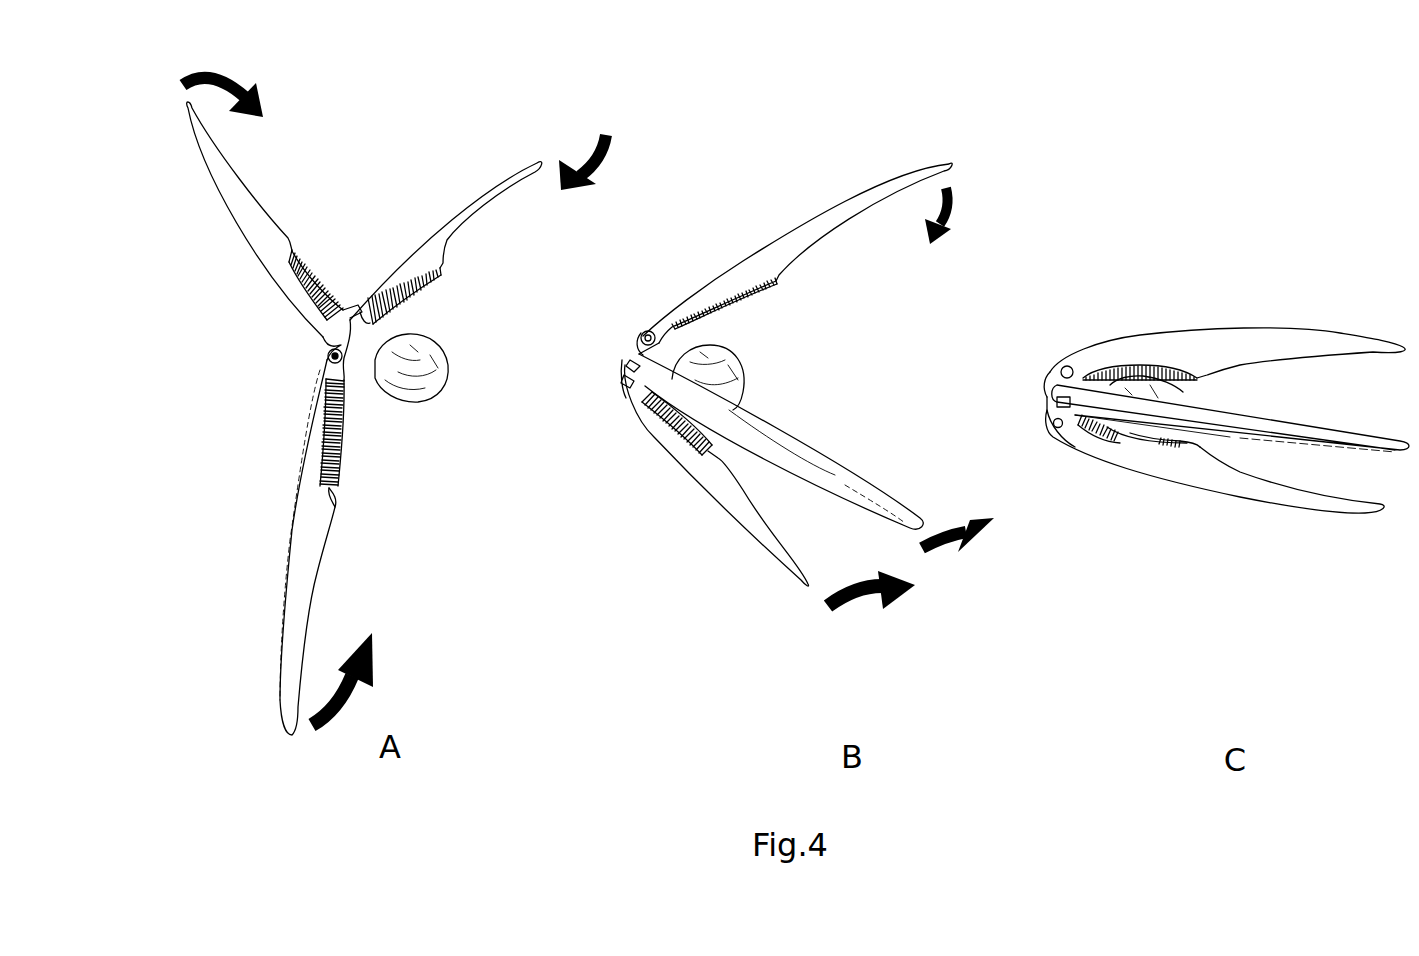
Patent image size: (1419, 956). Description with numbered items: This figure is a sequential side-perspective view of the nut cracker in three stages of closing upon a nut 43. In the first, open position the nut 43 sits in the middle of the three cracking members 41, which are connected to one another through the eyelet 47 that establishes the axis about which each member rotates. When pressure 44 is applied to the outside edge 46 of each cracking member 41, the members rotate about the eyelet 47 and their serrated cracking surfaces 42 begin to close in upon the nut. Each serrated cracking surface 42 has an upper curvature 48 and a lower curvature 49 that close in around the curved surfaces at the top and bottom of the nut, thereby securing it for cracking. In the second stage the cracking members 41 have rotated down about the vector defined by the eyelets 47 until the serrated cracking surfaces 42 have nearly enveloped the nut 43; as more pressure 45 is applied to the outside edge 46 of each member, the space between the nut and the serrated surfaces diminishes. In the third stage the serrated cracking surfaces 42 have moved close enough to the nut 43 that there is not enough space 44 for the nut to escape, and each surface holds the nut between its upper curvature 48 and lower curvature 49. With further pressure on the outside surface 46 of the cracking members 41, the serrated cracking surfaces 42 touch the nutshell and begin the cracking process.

In FIG. 4A, the cracking member 41 is at (466, 200).
In FIG. 4B, the cracking member 41 is at (808, 241).
In FIG. 4C, the cracking member 41 is at (1220, 343).
In FIG. 4A, the serrated cracking surface 42 is at (405, 295).
In FIG. 4B, the serrated cracking surface 42 is at (740, 293).
In FIG. 4C, the serrated cracking surface 42 is at (1128, 365).
In FIG. 4A, the nut 43 is at (440, 390).
In FIG. 4B, the nut 43 is at (733, 383).
In FIG. 4C, the nut 43 is at (1155, 383).
In FIG. 4A, the pressure 44 is at (372, 677).
In FIG. 4B, the pressure 44 is at (600, 135).
In FIG. 4C, the pressure 44 is at (1195, 393).
In FIG. 4B, the pressure 45 is at (850, 612).
In FIG. 4A, the outside edge 46 is at (283, 613).
In FIG. 4B, the outside edge 46 is at (890, 175).
In FIG. 4C, the outside edge 46 is at (1325, 328).
In FIG. 4A, the eyelet 47 is at (326, 360).
In FIG. 4B, the eyelet 47 is at (645, 332).
In FIG. 4C, the eyelet 47 is at (1061, 406).
In FIG. 4A, the upper curvature 48 is at (340, 393).
In FIG. 4B, the upper curvature 48 is at (717, 475).
In FIG. 4C, the upper curvature 48 is at (1093, 437).
In FIG. 4A, the lower curvature 49 is at (332, 478).
In FIG. 4C, the lower curvature 49 is at (1173, 442).